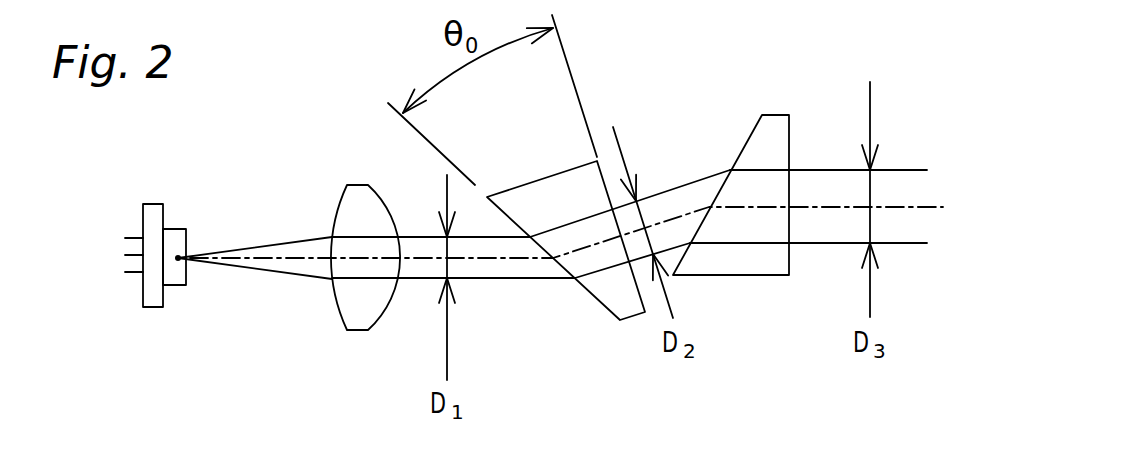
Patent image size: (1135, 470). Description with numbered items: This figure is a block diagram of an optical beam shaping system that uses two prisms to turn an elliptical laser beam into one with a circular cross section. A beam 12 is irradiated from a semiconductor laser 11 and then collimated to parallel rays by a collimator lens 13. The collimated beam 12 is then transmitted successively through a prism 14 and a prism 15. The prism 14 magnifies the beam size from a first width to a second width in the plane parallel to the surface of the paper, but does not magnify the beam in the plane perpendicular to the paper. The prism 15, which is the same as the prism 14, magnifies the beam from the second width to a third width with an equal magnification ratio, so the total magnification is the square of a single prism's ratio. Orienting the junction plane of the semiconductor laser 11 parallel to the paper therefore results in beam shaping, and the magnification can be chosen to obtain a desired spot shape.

The semiconductor laser 11 is at (178, 256).
The beam 12 is at (280, 237).
The collimator lens 13 is at (350, 330).
The prism 14 is at (603, 305).
The prism 15 is at (762, 276).